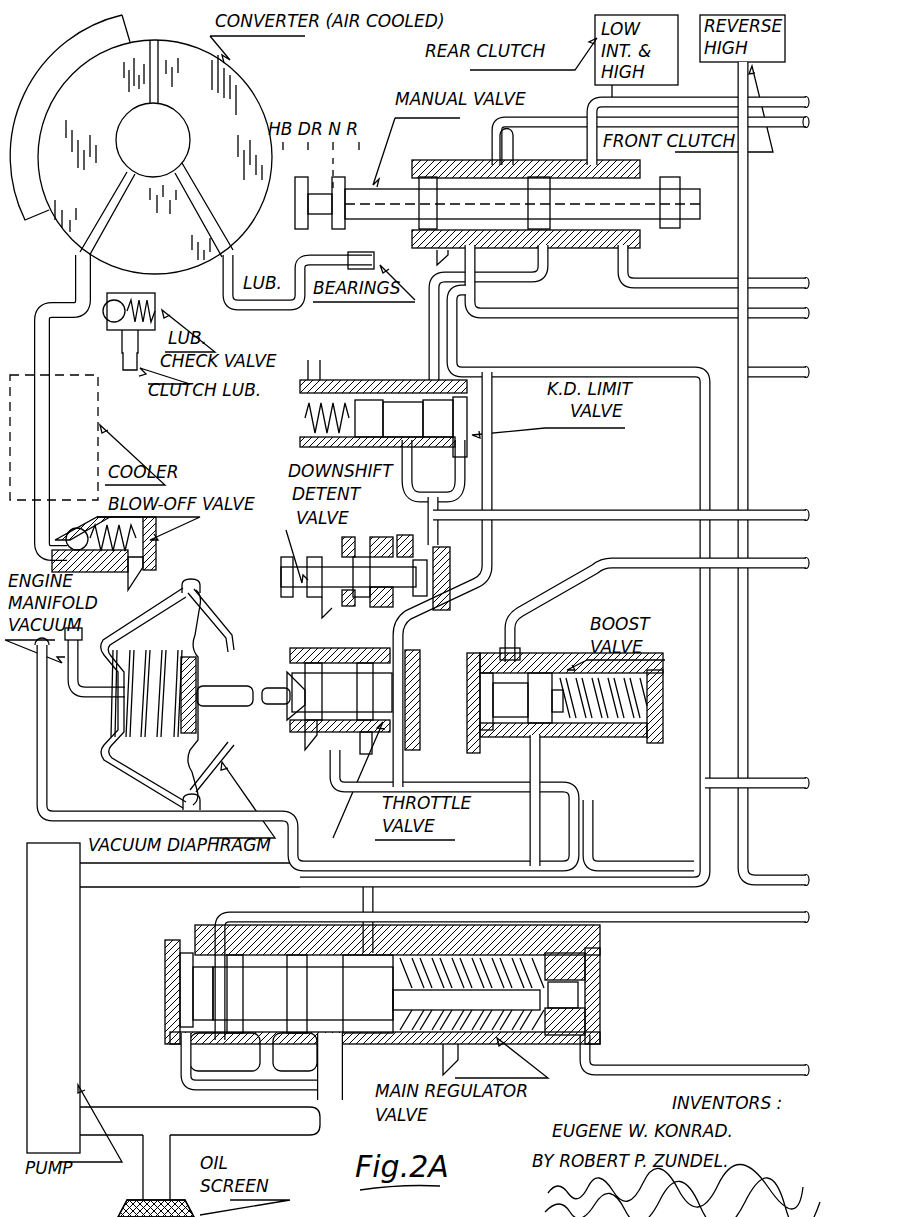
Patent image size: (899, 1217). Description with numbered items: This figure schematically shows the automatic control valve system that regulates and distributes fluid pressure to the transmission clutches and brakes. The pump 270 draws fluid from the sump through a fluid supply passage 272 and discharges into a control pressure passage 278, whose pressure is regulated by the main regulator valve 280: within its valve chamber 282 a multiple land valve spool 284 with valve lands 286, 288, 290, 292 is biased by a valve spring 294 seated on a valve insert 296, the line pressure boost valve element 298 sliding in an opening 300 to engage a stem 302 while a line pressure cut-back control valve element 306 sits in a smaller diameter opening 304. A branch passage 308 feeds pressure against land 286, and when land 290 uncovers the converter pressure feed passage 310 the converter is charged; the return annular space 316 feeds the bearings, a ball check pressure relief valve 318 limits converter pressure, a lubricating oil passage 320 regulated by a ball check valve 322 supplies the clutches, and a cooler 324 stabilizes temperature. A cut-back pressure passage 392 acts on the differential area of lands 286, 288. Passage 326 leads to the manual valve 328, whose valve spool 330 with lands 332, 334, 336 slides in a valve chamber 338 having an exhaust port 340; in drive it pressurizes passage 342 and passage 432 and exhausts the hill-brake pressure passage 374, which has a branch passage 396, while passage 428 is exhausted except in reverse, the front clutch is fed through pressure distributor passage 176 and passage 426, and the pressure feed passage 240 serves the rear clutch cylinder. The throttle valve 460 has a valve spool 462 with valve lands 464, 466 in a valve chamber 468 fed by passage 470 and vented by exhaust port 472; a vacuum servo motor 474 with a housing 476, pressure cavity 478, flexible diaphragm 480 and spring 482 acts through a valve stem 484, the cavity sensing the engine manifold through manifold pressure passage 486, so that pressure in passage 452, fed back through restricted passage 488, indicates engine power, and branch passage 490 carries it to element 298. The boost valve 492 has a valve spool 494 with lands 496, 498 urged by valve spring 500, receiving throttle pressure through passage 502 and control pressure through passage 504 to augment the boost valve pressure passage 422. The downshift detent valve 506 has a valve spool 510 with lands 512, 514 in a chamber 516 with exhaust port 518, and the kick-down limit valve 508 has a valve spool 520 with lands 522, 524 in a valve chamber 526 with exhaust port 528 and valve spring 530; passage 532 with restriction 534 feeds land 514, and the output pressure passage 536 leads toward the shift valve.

The pressure distributor passage 176 is at (740, 79).
The pressure feed passage 240 is at (595, 80).
The pump 270 is at (78, 930).
The fluid supply passage 272 is at (145, 1186).
The control pressure passage 278 is at (86, 890).
The main regulator valve 280 is at (400, 935).
The valve chamber 282 is at (352, 965).
The multiple land valve spool 284 is at (320, 970).
The valve land 286 is at (180, 985).
The valve land 288 is at (210, 990).
The valve land 290 is at (317, 1050).
The valve land 292 is at (355, 1033).
The valve spring 294 is at (440, 958).
The valve insert 296 is at (590, 1018).
The line pressure boost valve element 298 is at (498, 1040).
The opening 300 is at (524, 965).
The stem 302 is at (470, 987).
The smaller diameter opening 304 is at (586, 996).
The line pressure cut-back control valve element 306 is at (590, 975).
The branch passage 308 is at (196, 1085).
The converter pressure feed passage 310 is at (36, 316).
The annular space 316 is at (200, 300).
The ball check pressure relief valve 318 is at (88, 512).
The lubricating oil passage 320 is at (123, 360).
The ball check valve 322 is at (118, 292).
The cooler 324 is at (98, 410).
The passage 326 is at (543, 278).
The manual valve 328 is at (592, 148).
The valve spool 330 is at (650, 228).
The valve land 332 is at (426, 178).
The valve land 334 is at (562, 262).
The valve land 336 is at (672, 190).
The valve chamber 338 is at (555, 178).
The exhaust port 340 is at (437, 256).
The passage 342 is at (795, 97).
The hill-brake pressure passage 374 is at (792, 128).
The cut-back pressure passage 392 is at (775, 924).
The branch passage 396 is at (492, 148).
The boost valve pressure passage 422 is at (785, 569).
The passage 426 is at (790, 380).
The passage 428 is at (790, 320).
The passage 432 is at (795, 288).
The throttle pressure passage 452 is at (792, 778).
The throttle valve 460 is at (383, 660).
The valve spool 462 is at (333, 750).
The valve land 464 is at (293, 718).
The valve land 466 is at (398, 677).
The valve chamber 468 is at (395, 695).
The passage 470 is at (365, 850).
The exhaust port 472 is at (300, 725).
The vacuum servo motor 474 is at (145, 575).
The housing 476 is at (175, 595).
The pressure cavity 478 is at (146, 760).
The flexible diaphragm 480 is at (193, 643).
The spring 482 is at (128, 738).
The valve stem 484 is at (247, 683).
The manifold pressure passage 486 is at (73, 695).
The restricted passage 488 is at (398, 718).
The branch passage 490 is at (592, 843).
The boost valve 492 is at (512, 656).
The valve spool 494 is at (500, 742).
The valve land 496 is at (403, 730).
The valve land 498 is at (548, 730).
The valve spring 500 is at (640, 725).
The passage 502 is at (400, 757).
The control pressure passage 504 is at (530, 850).
The downshift detent valve 506 is at (323, 604).
The kick-down limit valve 508 is at (300, 380).
The valve spool 510 is at (322, 566).
The valve land 512 is at (372, 556).
The valve land 514 is at (457, 568).
The downshift detent valve chamber 516 is at (372, 602).
The exhaust port 518 is at (342, 602).
The valve spool 520 is at (398, 402).
The valve land 522 is at (365, 397).
The valve land 524 is at (470, 413).
The valve chamber 526 is at (466, 445).
The exhaust port 528 is at (302, 440).
The valve spring 530 is at (304, 418).
The passage 532 is at (462, 488).
The restriction 534 is at (440, 540).
The downshift detent valve output pressure passage 536 is at (792, 510).